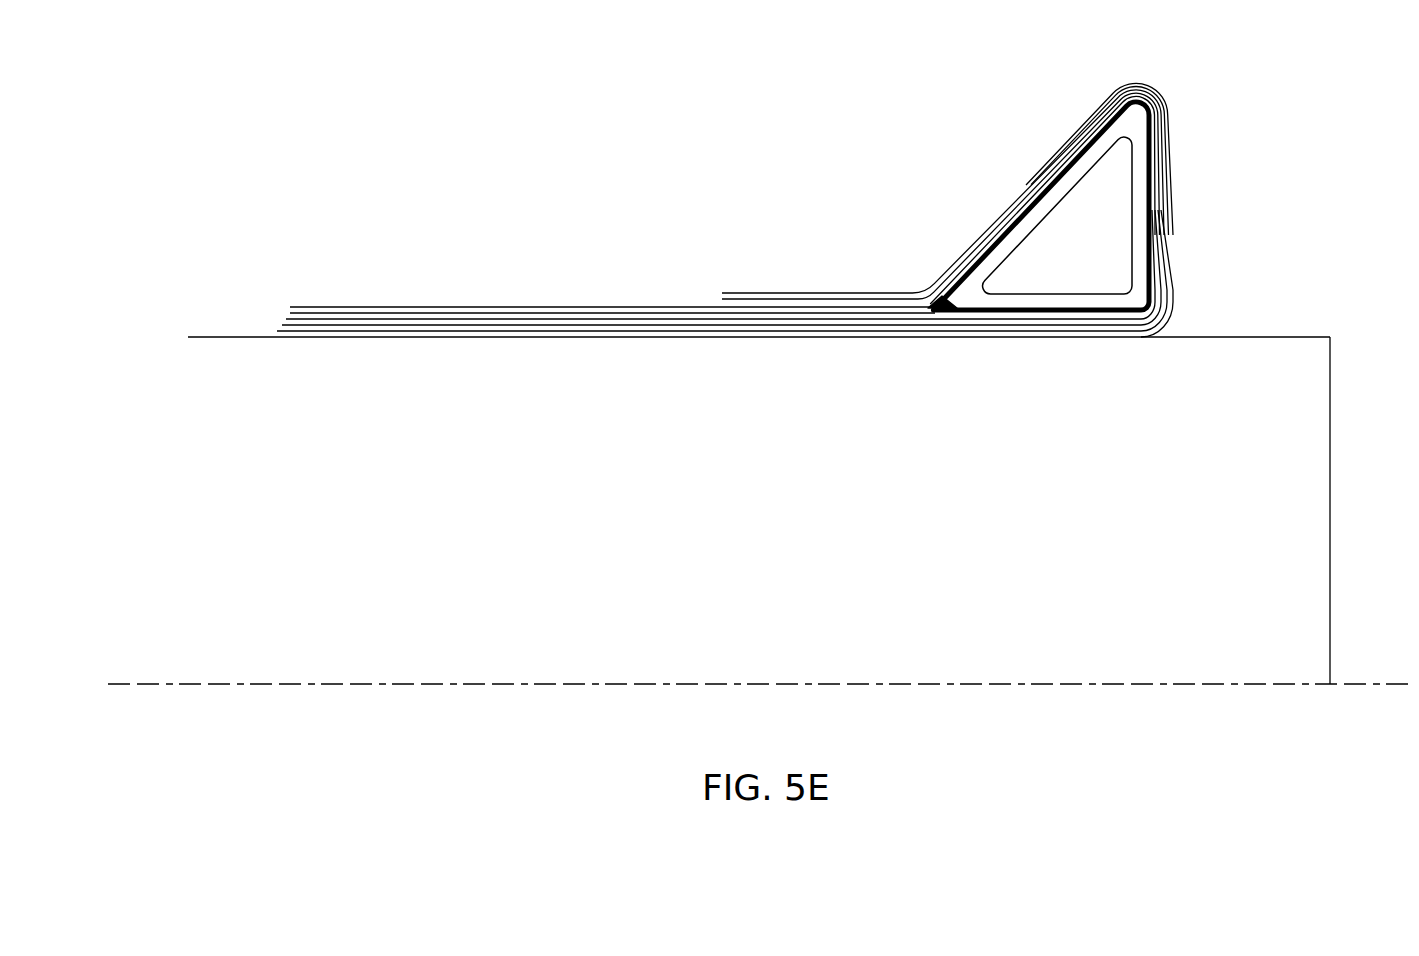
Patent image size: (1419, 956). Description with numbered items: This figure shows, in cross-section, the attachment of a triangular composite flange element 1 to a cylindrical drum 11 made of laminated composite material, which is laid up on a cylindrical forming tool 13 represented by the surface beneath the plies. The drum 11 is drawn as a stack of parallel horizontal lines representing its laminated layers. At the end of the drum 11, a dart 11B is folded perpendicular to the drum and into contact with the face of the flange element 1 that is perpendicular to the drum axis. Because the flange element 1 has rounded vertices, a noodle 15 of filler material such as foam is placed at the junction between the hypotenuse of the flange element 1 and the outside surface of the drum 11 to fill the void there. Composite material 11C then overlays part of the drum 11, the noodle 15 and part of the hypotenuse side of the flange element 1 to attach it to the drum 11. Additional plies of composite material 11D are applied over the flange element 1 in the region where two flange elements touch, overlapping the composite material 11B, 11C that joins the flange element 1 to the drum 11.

The flange element 1 is at (1140, 206).
The cylindrical drum 11 is at (527, 318).
The dart 11B is at (1171, 287).
The composite material 11C is at (922, 293).
The additional layers/plies of composite material 11D is at (1148, 88).
The cylindrical forming tool 13 is at (1305, 594).
The noodle 15 is at (944, 315).